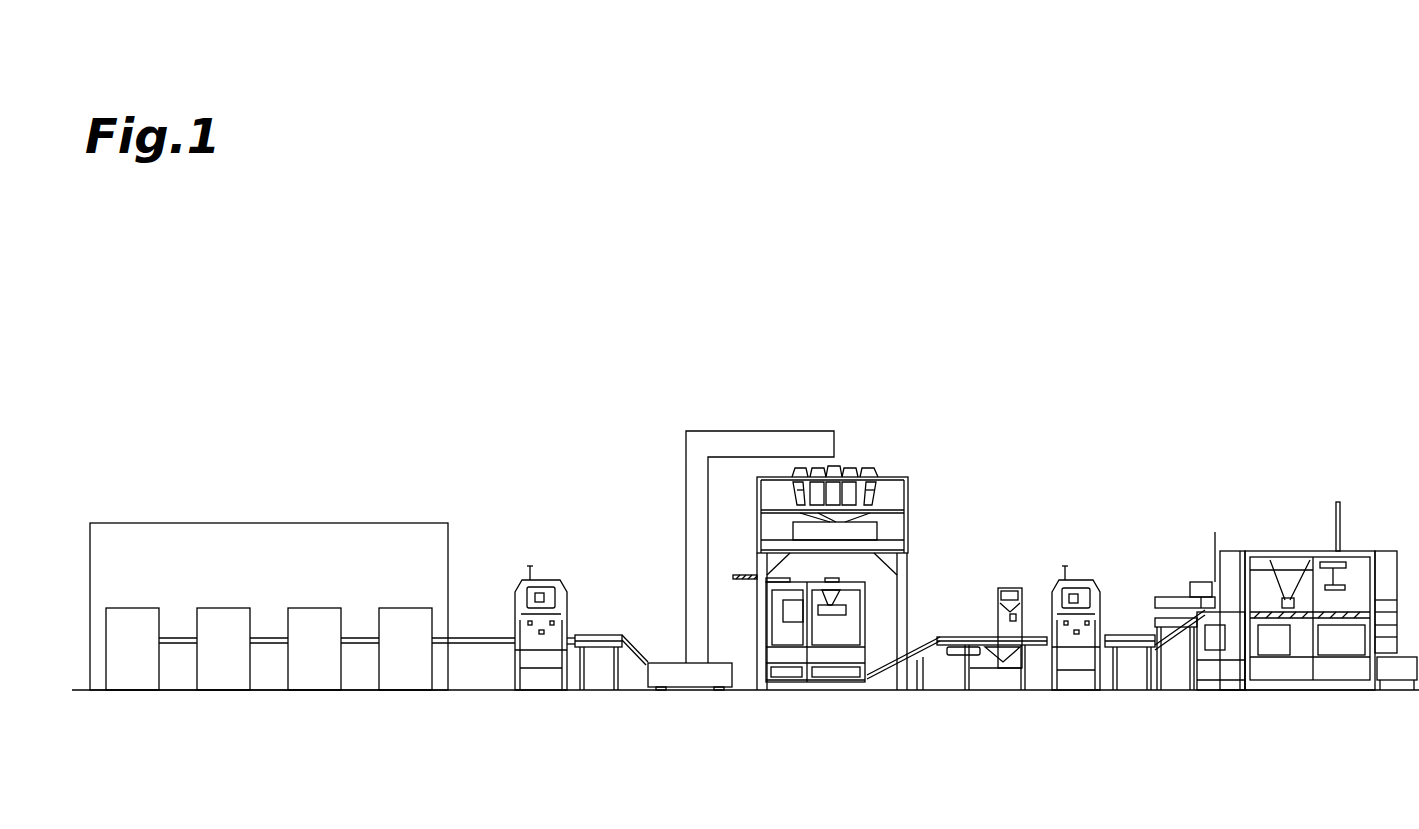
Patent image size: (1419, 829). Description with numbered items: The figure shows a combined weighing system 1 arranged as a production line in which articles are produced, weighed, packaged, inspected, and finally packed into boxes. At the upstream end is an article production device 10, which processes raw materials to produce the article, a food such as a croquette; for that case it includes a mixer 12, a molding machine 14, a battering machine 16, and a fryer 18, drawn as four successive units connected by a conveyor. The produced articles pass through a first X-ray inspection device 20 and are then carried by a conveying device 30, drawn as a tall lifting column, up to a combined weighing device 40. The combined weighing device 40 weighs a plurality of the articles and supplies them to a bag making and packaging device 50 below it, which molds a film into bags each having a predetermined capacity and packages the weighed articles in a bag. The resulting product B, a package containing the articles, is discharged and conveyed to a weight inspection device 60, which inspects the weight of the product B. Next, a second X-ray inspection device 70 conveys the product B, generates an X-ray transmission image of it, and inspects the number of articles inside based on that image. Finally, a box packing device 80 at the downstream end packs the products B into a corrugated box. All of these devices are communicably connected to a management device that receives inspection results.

The combined weighing system 1 is at (1249, 298).
The article production device 10 is at (283, 519).
The mixer 12 is at (135, 606).
The molding machine 14 is at (226, 606).
The battering machine 16 is at (316, 606).
The fryer 18 is at (407, 606).
The first X-ray inspection device 20 is at (543, 560).
The conveying device 30 is at (772, 428).
The combined weighing device 40 is at (893, 470).
The bag making and packaging device 50 is at (810, 693).
The product B is at (950, 635).
The weight inspection device 60 is at (1007, 578).
The second X-ray inspection device 70 is at (1087, 575).
The box packing device 80 is at (1364, 548).